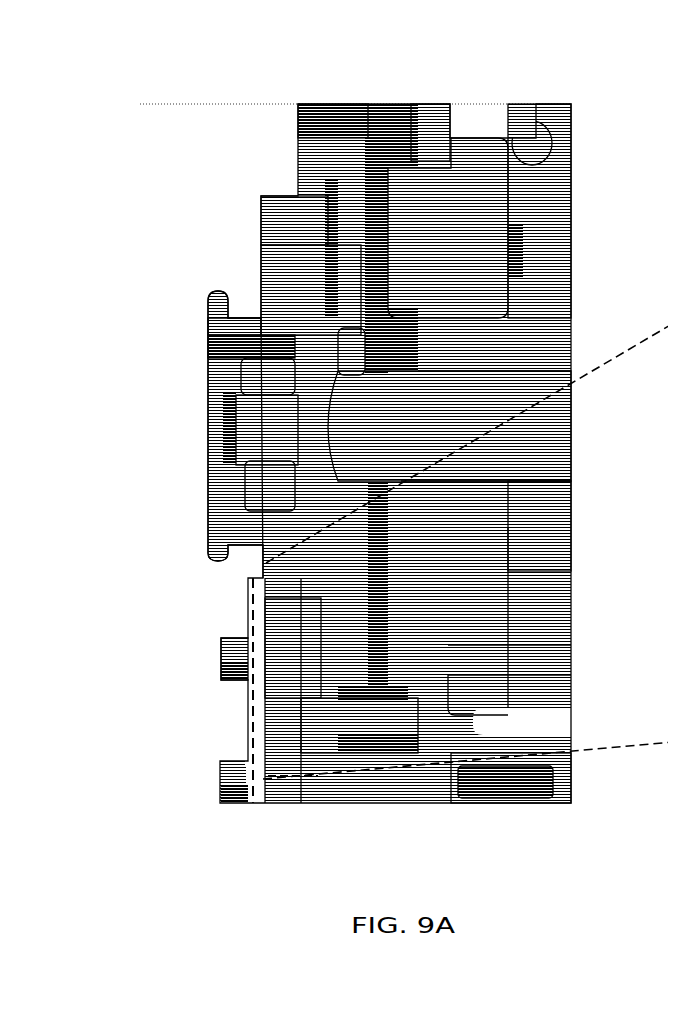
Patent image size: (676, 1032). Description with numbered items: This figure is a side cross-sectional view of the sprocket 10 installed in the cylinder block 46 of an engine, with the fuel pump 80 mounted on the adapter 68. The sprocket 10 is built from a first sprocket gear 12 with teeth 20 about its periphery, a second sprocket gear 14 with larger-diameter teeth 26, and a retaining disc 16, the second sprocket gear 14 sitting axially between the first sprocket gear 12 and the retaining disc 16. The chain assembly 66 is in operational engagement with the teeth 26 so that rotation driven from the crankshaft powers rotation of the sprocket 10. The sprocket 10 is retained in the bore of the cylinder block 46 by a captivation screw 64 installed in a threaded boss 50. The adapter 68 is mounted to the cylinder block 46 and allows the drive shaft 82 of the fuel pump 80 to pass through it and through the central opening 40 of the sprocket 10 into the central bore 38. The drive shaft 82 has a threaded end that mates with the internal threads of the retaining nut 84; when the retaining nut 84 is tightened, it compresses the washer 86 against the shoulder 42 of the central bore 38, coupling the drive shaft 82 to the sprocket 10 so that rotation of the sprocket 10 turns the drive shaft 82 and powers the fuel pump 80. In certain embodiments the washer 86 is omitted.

The sprocket 10 is at (182, 408).
The first sprocket gear 12 is at (190, 543).
The second sprocket gear 14 is at (274, 272).
The retaining disc 16 is at (340, 171).
The teeth 20 is at (202, 307).
The teeth 26 is at (277, 610).
The central bore 38 is at (217, 377).
The central opening 40 is at (350, 372).
The shoulder 42 is at (227, 350).
The cylinder block 46 is at (412, 99).
The threaded boss 50 is at (393, 769).
The captivation screw 64 is at (322, 720).
The chain assembly 66 is at (264, 202).
The adapter 68 is at (462, 128).
The fuel pump 80 is at (542, 267).
The drive shaft 82 is at (522, 444).
The retaining nut 84 is at (233, 468).
The washer 86 is at (278, 472).